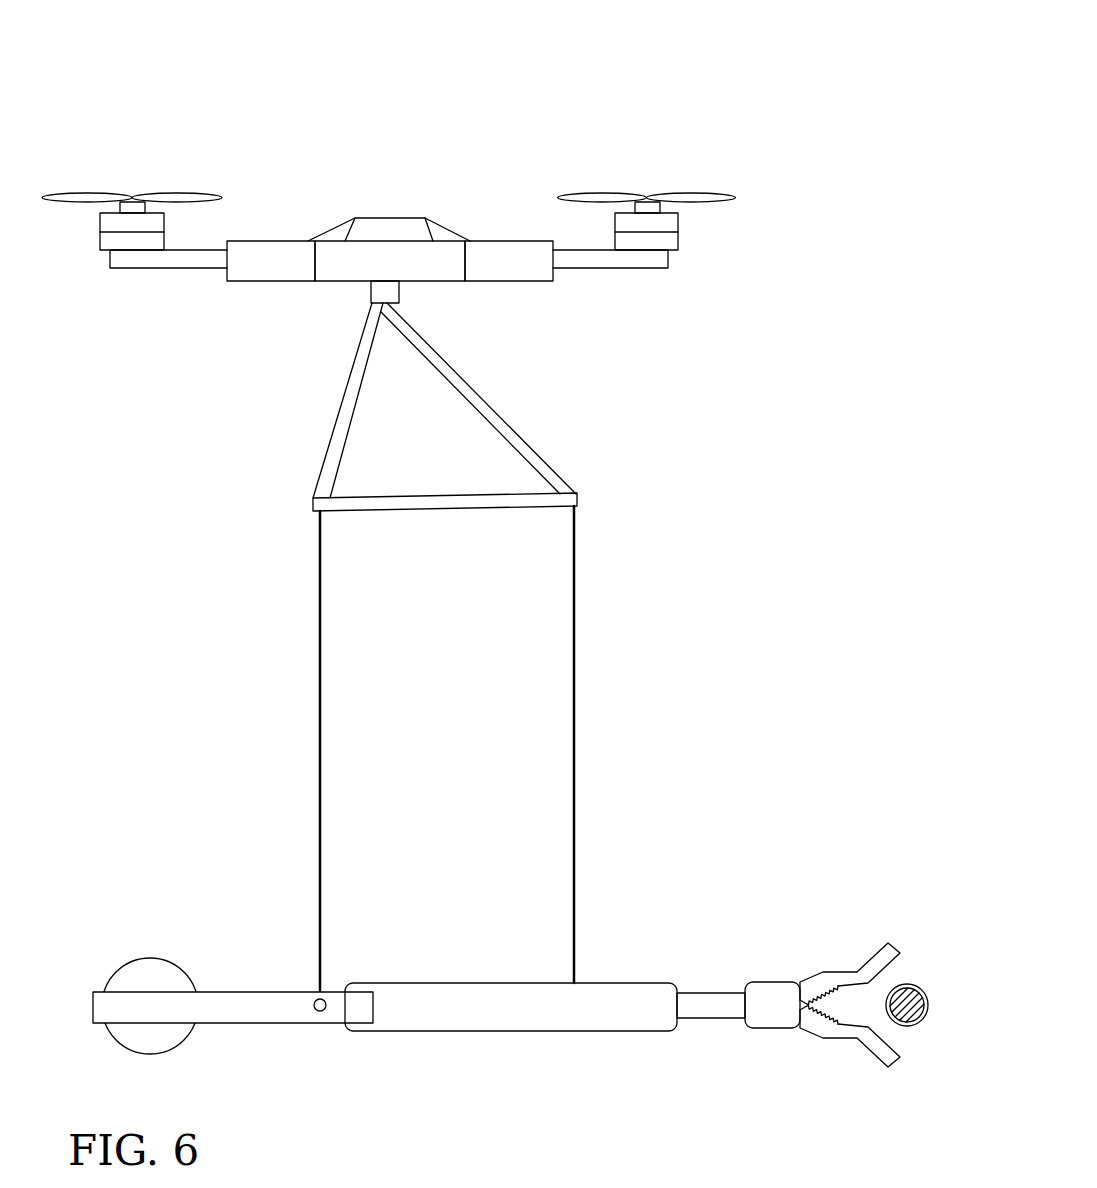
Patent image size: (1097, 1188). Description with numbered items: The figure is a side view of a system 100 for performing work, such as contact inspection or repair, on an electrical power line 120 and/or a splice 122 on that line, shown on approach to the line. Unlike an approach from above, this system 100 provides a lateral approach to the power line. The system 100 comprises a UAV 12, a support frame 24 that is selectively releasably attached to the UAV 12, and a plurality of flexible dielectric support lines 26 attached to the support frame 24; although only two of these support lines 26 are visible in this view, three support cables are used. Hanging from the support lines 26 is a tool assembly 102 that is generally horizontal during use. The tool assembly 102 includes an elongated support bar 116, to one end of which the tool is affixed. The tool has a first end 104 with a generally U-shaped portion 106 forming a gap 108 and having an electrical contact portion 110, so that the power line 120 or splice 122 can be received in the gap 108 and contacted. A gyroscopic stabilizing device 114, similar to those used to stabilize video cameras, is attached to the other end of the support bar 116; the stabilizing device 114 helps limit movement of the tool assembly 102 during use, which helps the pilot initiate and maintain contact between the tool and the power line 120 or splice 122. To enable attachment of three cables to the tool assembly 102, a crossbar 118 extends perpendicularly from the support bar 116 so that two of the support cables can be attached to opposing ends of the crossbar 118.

The system 100 is at (748, 83).
The UAV 12 is at (480, 183).
The support frame 24 is at (500, 412).
The flexible dielectric support lines 26 is at (575, 635).
The tool assembly 102 is at (442, 1063).
The first end 104 is at (770, 1022).
The U-shaped portion 106 is at (875, 953).
The gap 108 is at (896, 972).
The electrical contact portion 110 is at (843, 1010).
The gyroscopic stabilizing device 114 is at (127, 978).
The support bar 116 is at (553, 1020).
The crossbar 118 is at (313, 1010).
The electrical power line 120 is at (922, 1015).
The splice 122 is at (883, 1005).